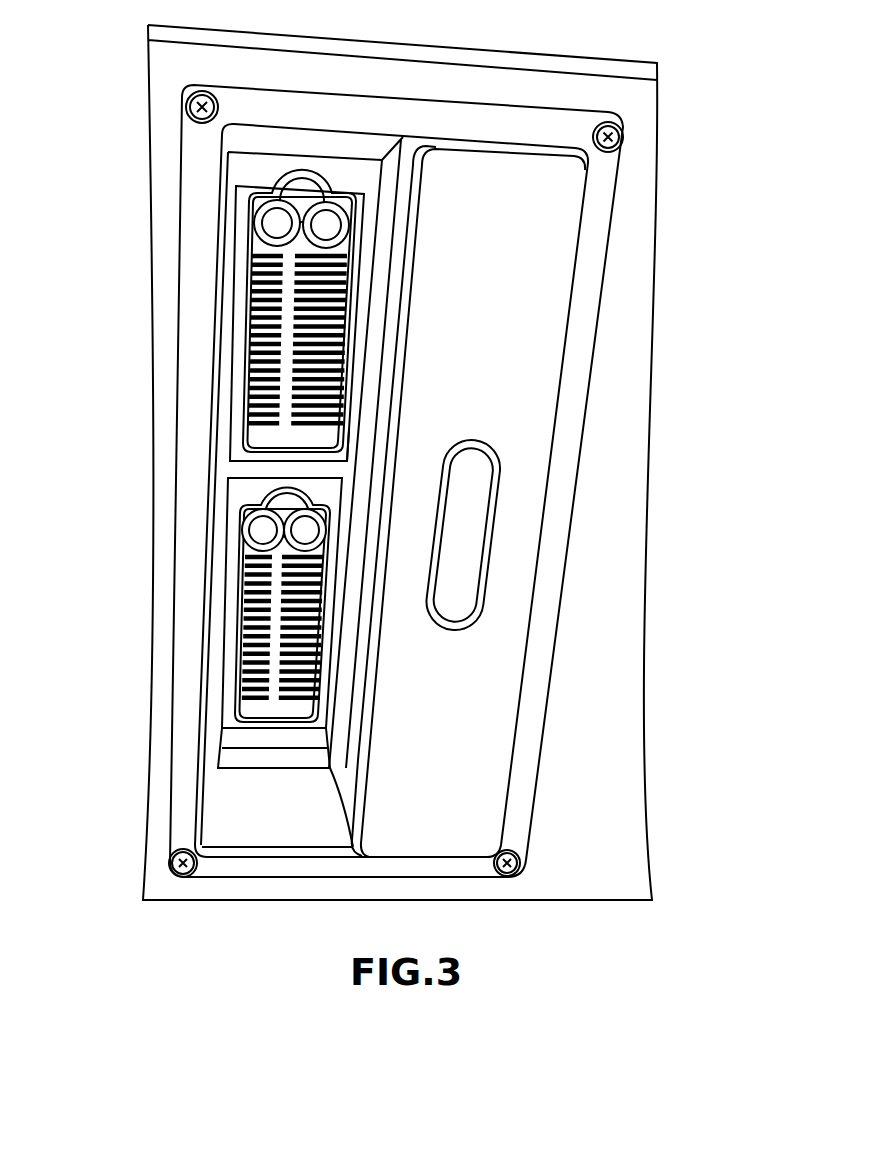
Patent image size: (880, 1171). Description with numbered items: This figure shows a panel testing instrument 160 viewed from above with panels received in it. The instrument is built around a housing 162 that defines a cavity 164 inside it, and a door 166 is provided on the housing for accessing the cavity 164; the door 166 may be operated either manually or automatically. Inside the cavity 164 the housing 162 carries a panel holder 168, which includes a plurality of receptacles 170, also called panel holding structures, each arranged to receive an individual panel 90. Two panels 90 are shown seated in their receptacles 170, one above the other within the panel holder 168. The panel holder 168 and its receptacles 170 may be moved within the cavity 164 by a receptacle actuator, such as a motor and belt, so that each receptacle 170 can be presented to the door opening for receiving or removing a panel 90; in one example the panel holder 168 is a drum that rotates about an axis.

The panel testing instrument 160 is at (77, 60).
The housing 162 is at (645, 126).
The cavity 164 is at (245, 150).
The door 166 is at (554, 240).
The panel holder 168 is at (240, 463).
The panel 90 is at (262, 318).
The receptacle 170 is at (348, 442).